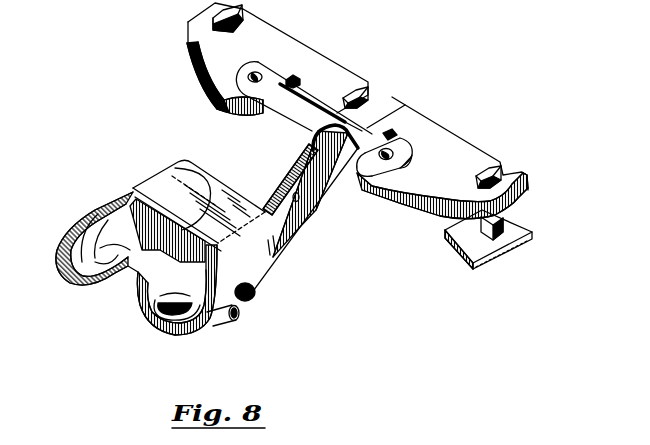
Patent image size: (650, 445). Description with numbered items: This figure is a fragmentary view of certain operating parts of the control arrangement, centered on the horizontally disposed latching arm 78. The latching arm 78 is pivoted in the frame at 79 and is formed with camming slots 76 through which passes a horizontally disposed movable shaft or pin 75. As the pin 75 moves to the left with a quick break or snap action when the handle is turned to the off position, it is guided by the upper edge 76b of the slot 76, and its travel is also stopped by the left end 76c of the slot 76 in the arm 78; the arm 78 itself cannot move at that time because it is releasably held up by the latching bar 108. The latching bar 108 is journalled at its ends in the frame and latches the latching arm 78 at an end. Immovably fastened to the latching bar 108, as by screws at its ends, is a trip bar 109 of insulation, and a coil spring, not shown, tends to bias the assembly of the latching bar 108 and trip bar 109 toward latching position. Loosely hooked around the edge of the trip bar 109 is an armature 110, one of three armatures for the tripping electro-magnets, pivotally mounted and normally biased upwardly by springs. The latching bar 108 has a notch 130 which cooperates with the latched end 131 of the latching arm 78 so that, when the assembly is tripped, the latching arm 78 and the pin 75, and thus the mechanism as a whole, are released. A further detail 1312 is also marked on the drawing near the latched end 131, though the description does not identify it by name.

The trip bar 109 is at (310, 57).
The latching bar 108 is at (281, 128).
The latched end 131 is at (392, 99).
The rib 1312 is at (302, 172).
The notch 130 is at (348, 180).
The armature 110 is at (508, 240).
The latching arm 78 is at (178, 169).
The camming slot 76 is at (157, 337).
The upper edge of slot 76b is at (83, 287).
The left end of slot 76c is at (132, 307).
The movable shaft or pin 75 is at (243, 318).
The pivot of latching arm 79 is at (257, 292).